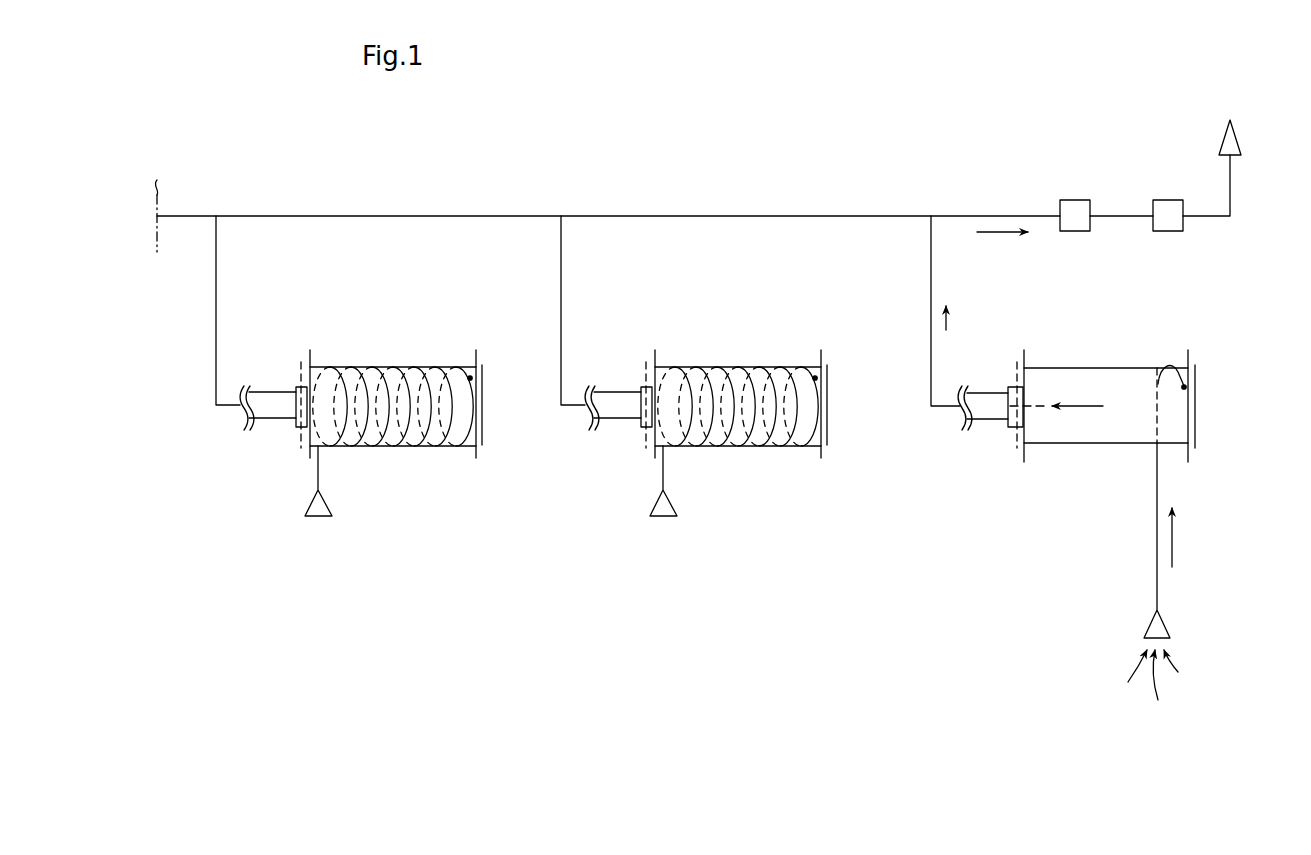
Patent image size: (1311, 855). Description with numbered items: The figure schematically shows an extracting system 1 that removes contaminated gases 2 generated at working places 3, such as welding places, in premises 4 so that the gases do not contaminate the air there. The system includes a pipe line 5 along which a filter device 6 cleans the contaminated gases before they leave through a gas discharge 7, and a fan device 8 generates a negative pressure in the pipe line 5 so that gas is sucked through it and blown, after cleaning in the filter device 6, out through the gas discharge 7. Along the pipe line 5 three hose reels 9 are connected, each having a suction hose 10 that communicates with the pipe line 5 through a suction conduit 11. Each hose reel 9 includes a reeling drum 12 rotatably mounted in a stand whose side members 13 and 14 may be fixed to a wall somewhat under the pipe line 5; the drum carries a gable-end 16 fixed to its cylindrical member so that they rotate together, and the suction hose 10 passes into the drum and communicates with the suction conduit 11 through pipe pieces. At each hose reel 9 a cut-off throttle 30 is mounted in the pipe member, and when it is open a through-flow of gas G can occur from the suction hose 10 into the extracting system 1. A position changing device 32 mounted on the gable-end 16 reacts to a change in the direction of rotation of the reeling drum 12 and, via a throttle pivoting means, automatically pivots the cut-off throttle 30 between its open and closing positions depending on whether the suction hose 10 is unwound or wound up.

The extracting system 1 is at (1127, 182).
The contaminated gases 2 is at (1178, 672).
The working places 3 is at (1183, 650).
The premises 4 is at (1228, 538).
The pipe line 5 is at (716, 216).
The filter device 6 is at (1070, 200).
The gas discharge 7 is at (1241, 144).
The fan device 8 is at (1165, 200).
The hose reel 9 is at (384, 346).
The suction hose 10 is at (318, 483).
The suction conduit 11 is at (216, 302).
The reeling drum 12 is at (1110, 361).
The side member 13 is at (1012, 364).
The side member 14 is at (1197, 372).
The gable-end 16 is at (1026, 352).
The cut-off throttle 30 is at (296, 410).
The position changing device 32 is at (1031, 432).
The through-flow of gas G is at (993, 230).